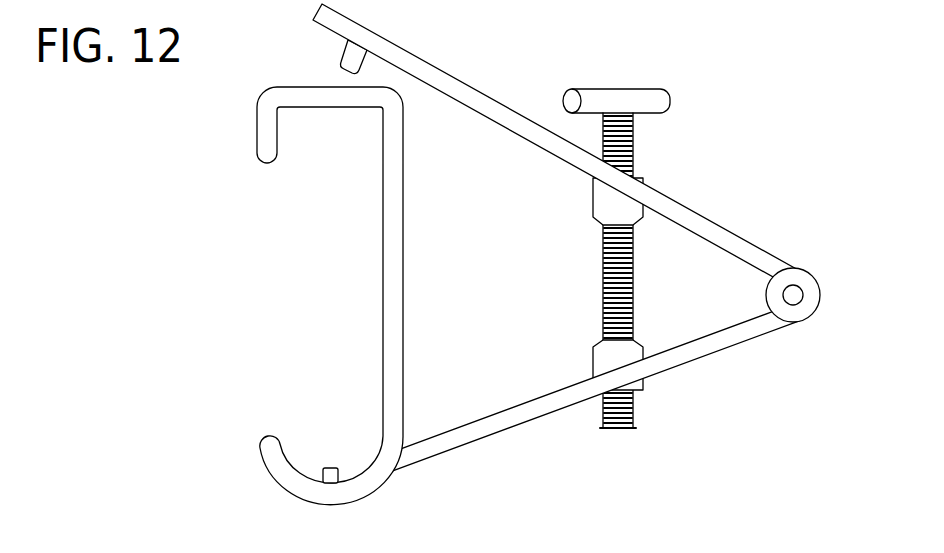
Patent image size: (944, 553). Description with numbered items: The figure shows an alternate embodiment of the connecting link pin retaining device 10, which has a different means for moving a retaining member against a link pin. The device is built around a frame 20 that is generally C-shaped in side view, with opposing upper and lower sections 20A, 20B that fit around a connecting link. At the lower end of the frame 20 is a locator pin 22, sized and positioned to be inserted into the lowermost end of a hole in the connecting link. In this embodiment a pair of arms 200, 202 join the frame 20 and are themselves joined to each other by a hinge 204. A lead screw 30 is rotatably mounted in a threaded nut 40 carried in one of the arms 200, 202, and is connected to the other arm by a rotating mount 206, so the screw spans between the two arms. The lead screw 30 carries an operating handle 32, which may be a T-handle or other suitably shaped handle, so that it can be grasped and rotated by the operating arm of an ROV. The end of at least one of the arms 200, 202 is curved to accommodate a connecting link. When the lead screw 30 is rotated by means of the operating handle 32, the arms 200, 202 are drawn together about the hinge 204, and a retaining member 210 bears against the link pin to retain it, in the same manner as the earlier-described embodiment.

The retaining device 10 is at (772, 119).
The frame 20 is at (367, 482).
The upper section 20A is at (226, 83).
The lower section 20B is at (226, 428).
The locator pin 22 is at (330, 468).
The lead screw 30 is at (603, 287).
The operating handle 32 is at (638, 95).
The nut 40 is at (625, 207).
The arm 200 is at (710, 230).
The arm 202 is at (720, 342).
The hinge 204 is at (810, 310).
The rotating mount 206 is at (627, 358).
The retaining member 210 is at (328, 49).